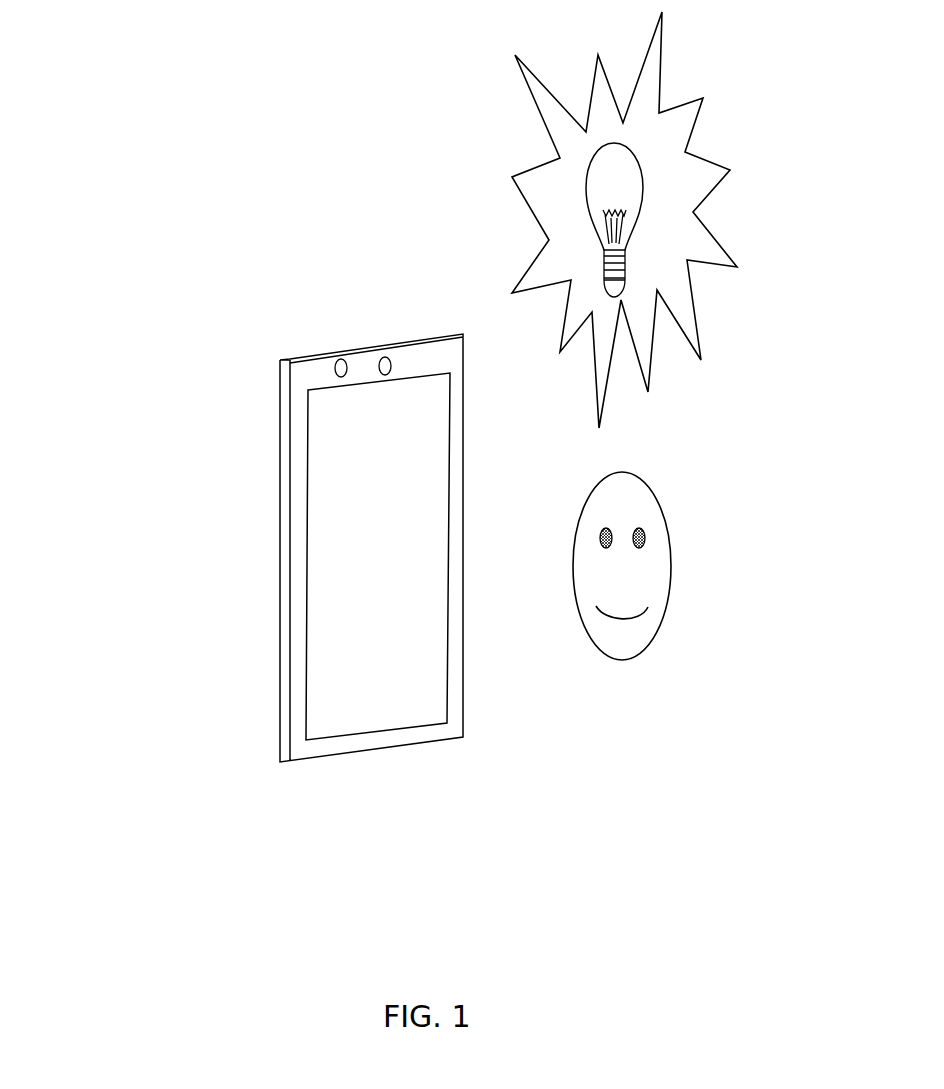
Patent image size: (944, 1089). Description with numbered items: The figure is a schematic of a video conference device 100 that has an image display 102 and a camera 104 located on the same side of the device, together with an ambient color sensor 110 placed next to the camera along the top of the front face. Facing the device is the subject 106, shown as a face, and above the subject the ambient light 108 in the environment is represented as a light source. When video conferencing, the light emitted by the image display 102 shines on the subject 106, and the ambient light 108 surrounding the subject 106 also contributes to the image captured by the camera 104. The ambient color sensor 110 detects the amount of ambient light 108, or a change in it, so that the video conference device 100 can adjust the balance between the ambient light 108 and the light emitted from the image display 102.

The video conference device 100 is at (276, 610).
The image display 102 is at (360, 710).
The camera 104 is at (383, 357).
The subject 106 is at (670, 597).
The ambient light 108 is at (703, 157).
The ambient color sensor 110 is at (334, 368).